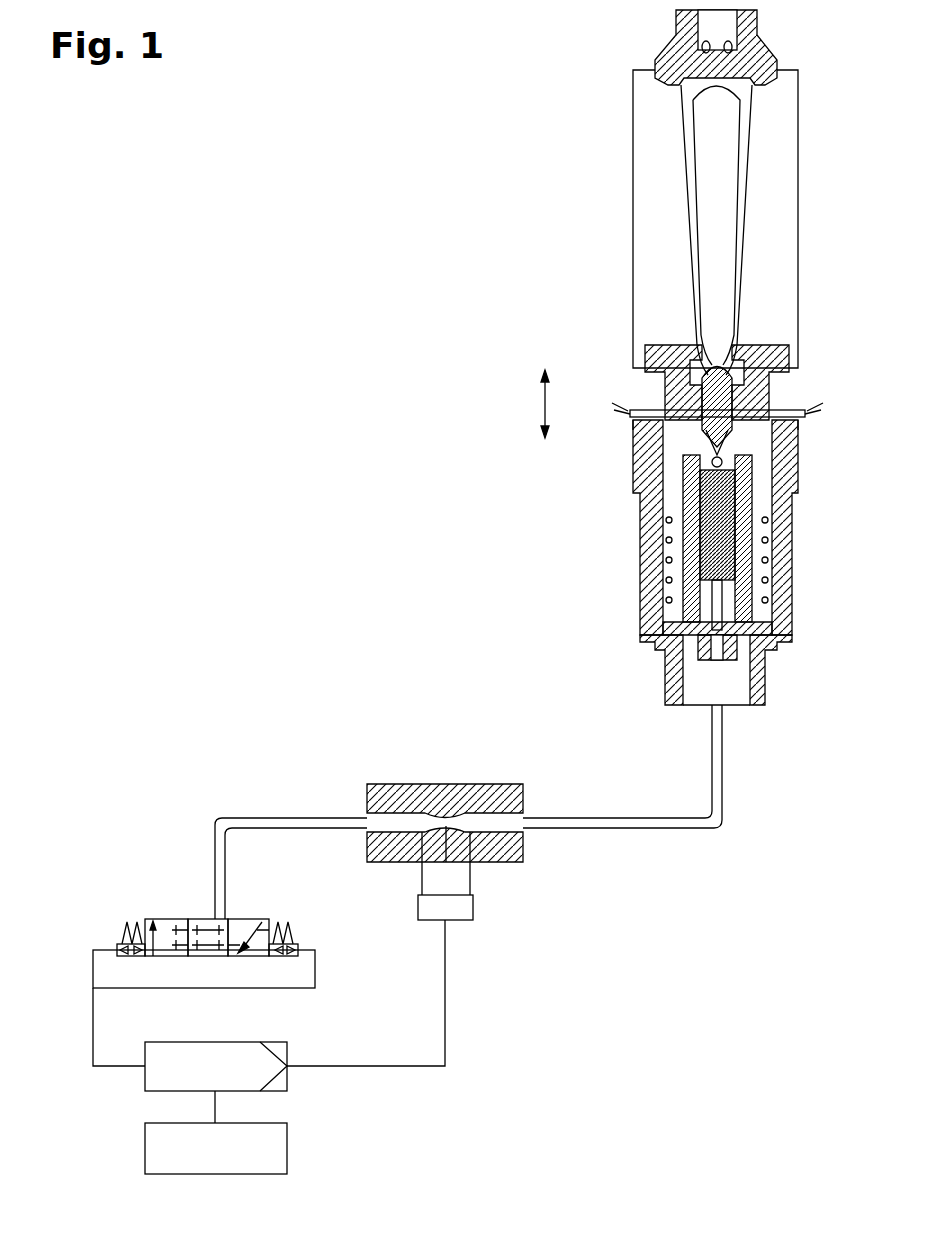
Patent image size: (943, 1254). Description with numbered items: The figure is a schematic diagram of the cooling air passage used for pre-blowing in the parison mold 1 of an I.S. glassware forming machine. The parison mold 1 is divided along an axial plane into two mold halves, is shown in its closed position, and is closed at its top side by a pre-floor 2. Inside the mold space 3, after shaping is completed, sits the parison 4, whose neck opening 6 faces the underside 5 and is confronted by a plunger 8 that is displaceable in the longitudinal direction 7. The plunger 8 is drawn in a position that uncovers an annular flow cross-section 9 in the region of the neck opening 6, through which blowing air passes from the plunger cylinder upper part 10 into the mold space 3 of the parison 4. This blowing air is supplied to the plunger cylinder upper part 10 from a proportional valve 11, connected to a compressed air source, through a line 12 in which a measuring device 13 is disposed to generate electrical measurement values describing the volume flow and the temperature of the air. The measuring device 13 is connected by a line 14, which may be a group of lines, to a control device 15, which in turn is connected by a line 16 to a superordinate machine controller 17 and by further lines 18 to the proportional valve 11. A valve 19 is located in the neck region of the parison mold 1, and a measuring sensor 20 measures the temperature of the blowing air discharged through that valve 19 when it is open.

The parison mold 1 is at (655, 248).
The pre-floor 2 is at (660, 52).
The mold space 3 is at (710, 150).
The parison 4 is at (697, 188).
The underside 5 is at (553, 720).
The neck opening 6 is at (722, 355).
The longitudinal direction 7 is at (545, 405).
The plunger 8 is at (672, 395).
The annular flow cross-section 9 is at (712, 345).
The plunger cylinder upper part 10 is at (640, 483).
The proportional valve 11 is at (175, 918).
The line 12 is at (277, 825).
The measuring device 13 is at (445, 805).
The line 14 is at (445, 992).
The control device 15 is at (287, 1075).
The line 16 is at (215, 1108).
The superordinate machine controller 17 is at (287, 1148).
The further lines 18 is at (93, 1020).
The valve 19 is at (645, 450).
The measuring sensor 20 is at (660, 406).